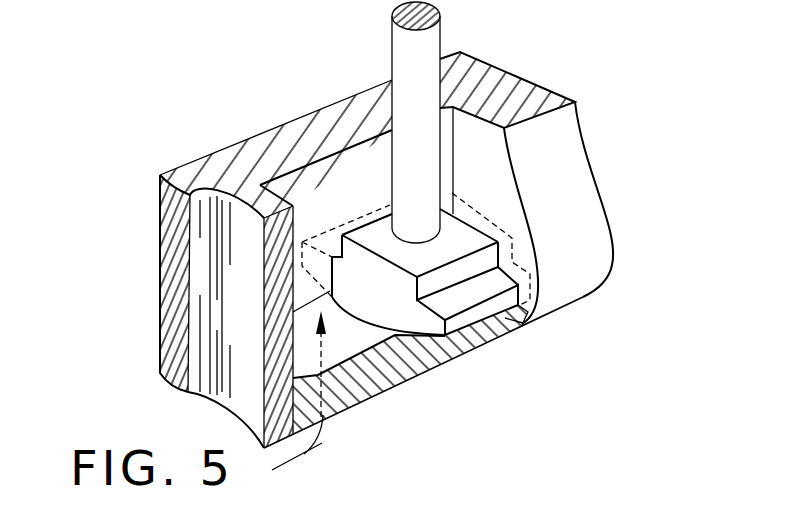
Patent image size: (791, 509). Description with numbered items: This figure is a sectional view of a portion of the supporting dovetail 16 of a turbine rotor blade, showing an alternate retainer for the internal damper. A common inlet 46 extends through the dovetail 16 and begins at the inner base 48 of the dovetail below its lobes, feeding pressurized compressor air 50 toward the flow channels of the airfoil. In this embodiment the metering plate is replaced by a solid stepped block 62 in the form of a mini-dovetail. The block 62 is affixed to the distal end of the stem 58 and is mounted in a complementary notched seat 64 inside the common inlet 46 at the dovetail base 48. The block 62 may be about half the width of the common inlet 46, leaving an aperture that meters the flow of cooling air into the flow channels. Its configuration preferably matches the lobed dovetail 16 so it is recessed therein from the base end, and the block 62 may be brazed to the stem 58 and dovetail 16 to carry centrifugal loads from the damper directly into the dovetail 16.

The supporting dovetail 16 is at (584, 147).
The common inlet 46 is at (347, 340).
The inner base of the dovetail 48 is at (522, 325).
The pressurized compressor air 50 is at (305, 453).
The stem 58 is at (443, 42).
The stepped block 62 is at (467, 243).
The notched seat 64 is at (332, 273).